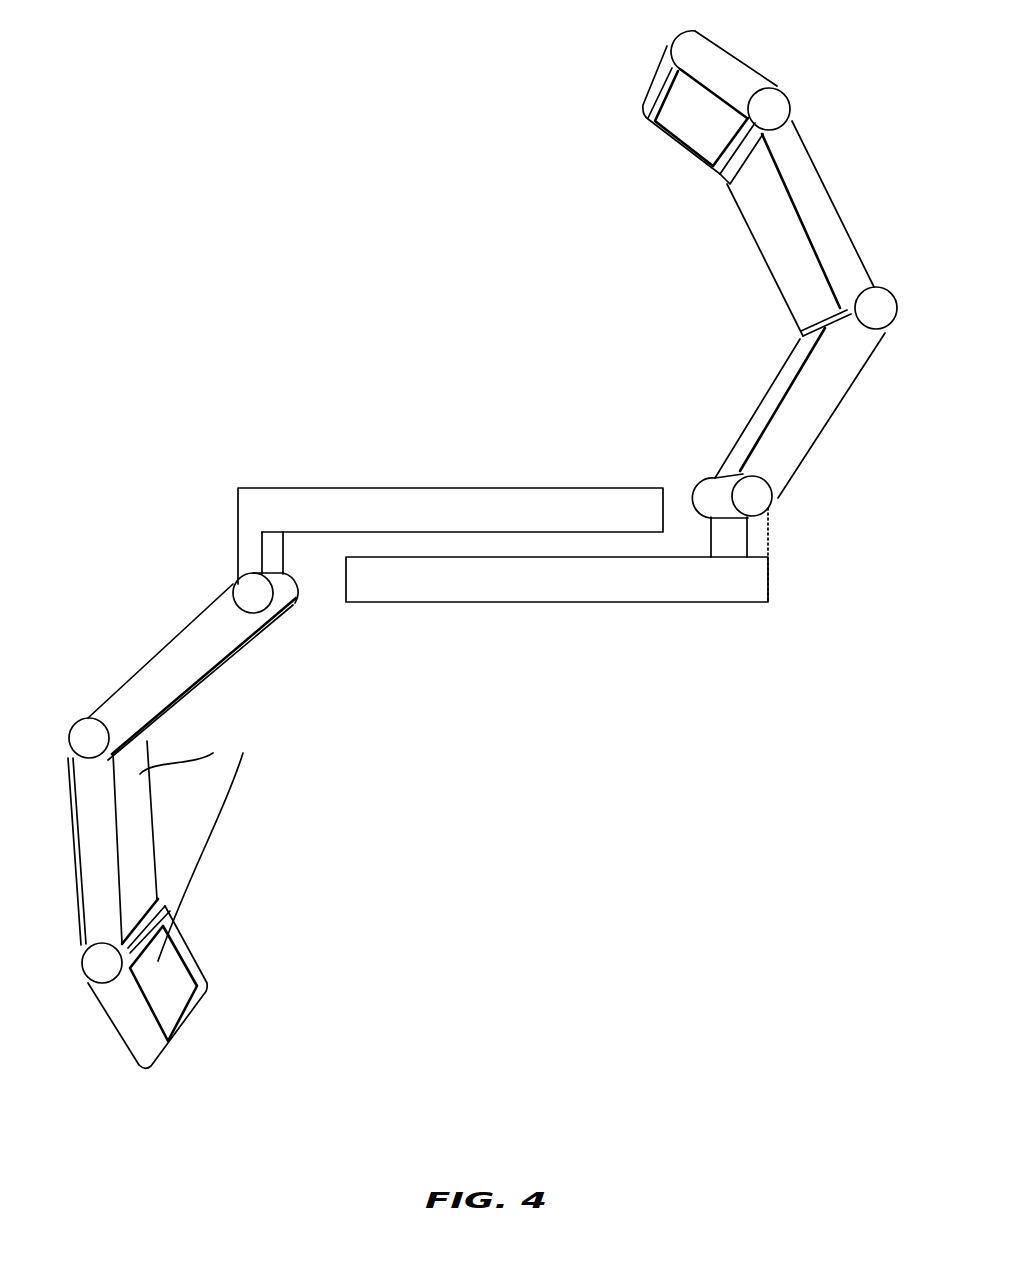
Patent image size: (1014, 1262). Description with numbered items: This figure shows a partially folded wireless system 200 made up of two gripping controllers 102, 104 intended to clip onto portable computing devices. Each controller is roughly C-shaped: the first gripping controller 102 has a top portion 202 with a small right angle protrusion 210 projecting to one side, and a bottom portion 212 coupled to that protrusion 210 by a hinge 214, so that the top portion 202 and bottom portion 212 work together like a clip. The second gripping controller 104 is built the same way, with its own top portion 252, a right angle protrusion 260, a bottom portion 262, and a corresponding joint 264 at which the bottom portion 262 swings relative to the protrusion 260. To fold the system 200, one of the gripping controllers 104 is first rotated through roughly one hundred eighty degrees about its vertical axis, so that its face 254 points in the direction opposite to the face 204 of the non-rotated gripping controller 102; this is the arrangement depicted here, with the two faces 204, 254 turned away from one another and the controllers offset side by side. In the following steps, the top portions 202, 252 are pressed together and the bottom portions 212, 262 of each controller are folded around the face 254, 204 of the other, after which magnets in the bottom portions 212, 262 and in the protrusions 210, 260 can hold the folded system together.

The wireless system 200 is at (441, 59).
The gripping controller 102 is at (238, 486).
The gripping controller 104 is at (768, 602).
The top portion 202 is at (267, 506).
The face 204 is at (428, 487).
The right angle protrusion 210 is at (247, 555).
The hinge 214 is at (266, 595).
The bottom portion 212 is at (140, 697).
The top portion 252 is at (428, 579).
The face 254 is at (502, 599).
The right angle protrusion 260 is at (756, 537).
The second shoulder joint 264 is at (757, 493).
The bottom portion 262 is at (686, 110).